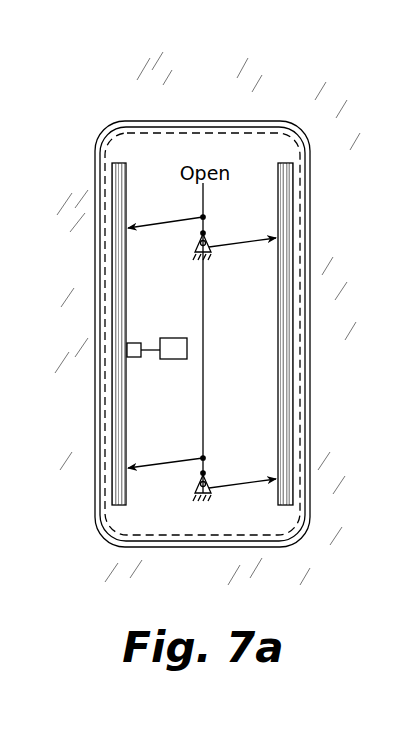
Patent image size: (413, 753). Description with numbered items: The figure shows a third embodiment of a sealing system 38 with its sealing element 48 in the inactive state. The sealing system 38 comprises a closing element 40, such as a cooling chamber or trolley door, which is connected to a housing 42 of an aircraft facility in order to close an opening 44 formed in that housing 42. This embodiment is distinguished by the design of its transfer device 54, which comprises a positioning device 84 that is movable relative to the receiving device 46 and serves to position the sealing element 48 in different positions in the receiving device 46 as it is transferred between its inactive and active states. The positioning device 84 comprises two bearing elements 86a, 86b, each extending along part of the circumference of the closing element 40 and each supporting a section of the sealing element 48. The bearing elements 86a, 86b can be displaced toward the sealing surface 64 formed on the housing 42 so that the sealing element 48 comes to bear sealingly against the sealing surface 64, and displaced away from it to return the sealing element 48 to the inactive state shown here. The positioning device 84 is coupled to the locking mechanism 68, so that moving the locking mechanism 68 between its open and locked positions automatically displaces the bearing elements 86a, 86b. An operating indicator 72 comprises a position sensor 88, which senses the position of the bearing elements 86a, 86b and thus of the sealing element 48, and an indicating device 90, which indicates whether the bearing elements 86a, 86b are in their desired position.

The sealing system 38 is at (333, 122).
The closing element 40 is at (177, 153).
The housing 42 is at (270, 103).
The opening 44 is at (102, 134).
The receiving device 46 is at (310, 332).
The sealing element 48 is at (305, 238).
The transfer device 54 is at (220, 311).
The sealing surface 64 is at (290, 540).
The locking mechanism 68 is at (242, 203).
The operating indicator 72 is at (159, 335).
The positioning device 84 is at (264, 445).
The bearing element 86a is at (127, 490).
The bearing element 86b is at (278, 500).
The position sensor 88 is at (135, 357).
The indicating device 90 is at (173, 338).